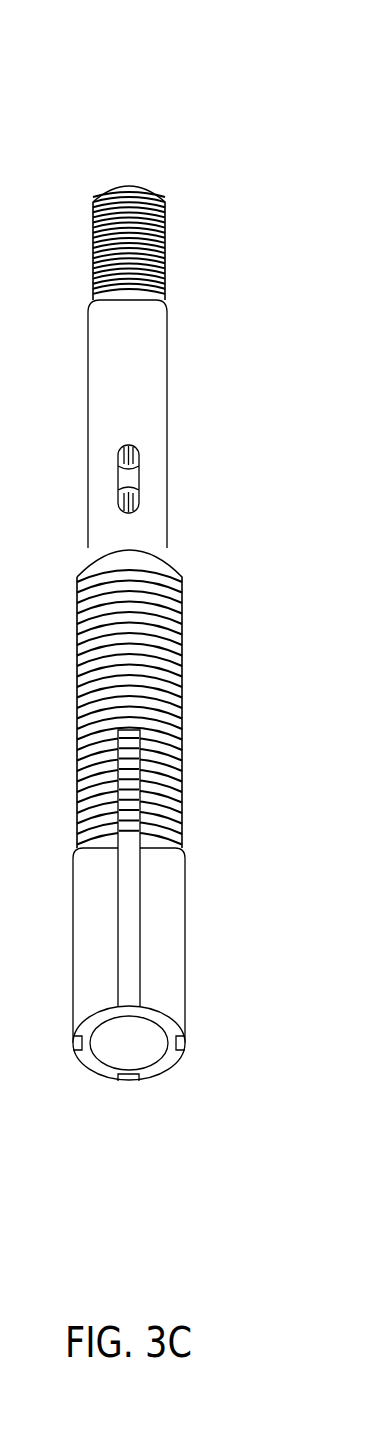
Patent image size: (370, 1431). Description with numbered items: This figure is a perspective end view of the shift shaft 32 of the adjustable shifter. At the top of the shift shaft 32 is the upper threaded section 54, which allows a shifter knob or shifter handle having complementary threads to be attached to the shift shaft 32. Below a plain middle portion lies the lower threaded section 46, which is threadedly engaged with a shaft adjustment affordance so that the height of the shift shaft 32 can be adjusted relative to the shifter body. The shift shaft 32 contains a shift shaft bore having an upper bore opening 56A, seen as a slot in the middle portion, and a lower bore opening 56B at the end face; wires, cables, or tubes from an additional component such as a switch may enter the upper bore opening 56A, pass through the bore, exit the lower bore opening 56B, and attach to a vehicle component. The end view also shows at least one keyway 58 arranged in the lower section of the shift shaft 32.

The shift shaft 32 is at (137, 38).
The upper threaded section 54 is at (165, 251).
The upper bore opening 56A is at (140, 479).
The lower threaded section 46 is at (180, 688).
The lower bore opening 56B is at (111, 1045).
The keyway 58 is at (129, 1085).